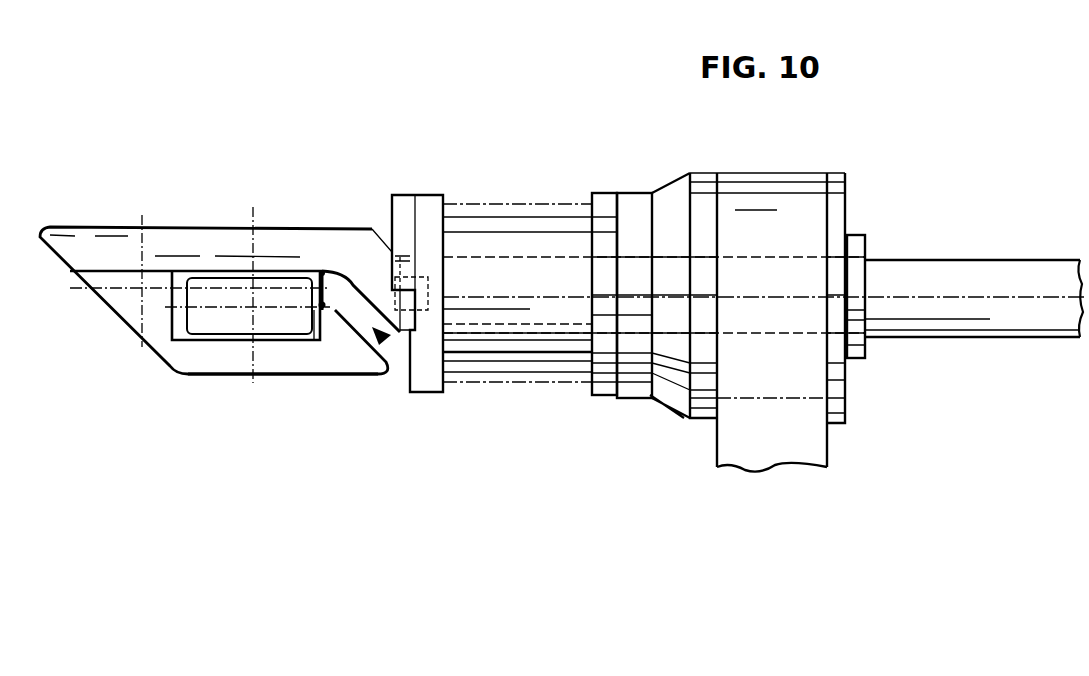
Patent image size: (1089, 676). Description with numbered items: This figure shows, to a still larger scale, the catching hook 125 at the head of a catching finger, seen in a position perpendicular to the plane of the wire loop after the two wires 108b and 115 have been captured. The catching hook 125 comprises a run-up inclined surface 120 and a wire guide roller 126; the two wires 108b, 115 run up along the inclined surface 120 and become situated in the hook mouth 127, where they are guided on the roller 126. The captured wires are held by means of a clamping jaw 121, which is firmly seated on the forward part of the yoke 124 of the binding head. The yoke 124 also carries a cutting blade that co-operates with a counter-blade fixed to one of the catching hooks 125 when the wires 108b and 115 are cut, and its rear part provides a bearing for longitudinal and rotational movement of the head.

The run-up inclined surface 120 is at (110, 313).
The wire guide roller 126 is at (208, 322).
The catching hook 125 is at (297, 358).
The wire 115 is at (335, 313).
The wire 108b is at (320, 270).
The hook mouth 127 is at (385, 340).
The clamping jaw 121 is at (340, 272).
The yoke 124 is at (670, 412).